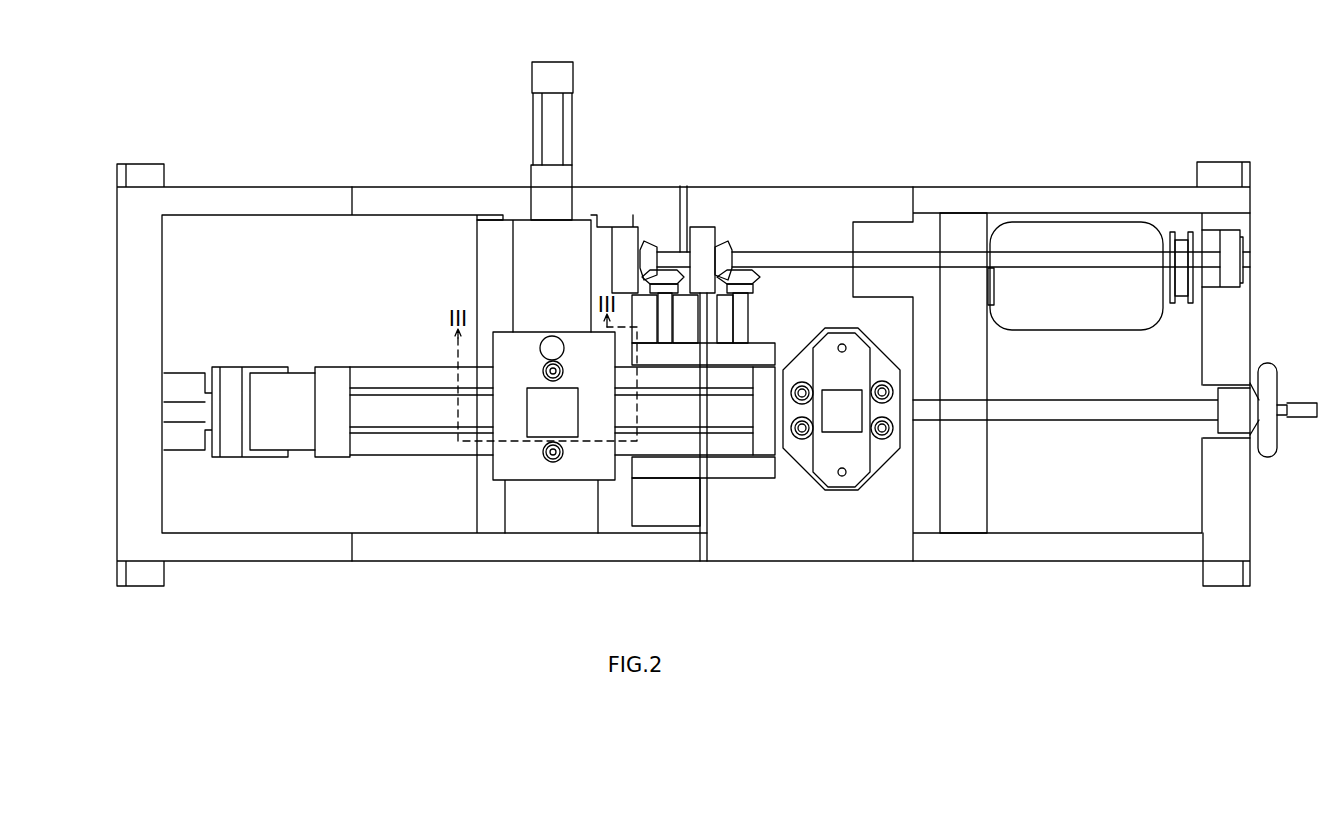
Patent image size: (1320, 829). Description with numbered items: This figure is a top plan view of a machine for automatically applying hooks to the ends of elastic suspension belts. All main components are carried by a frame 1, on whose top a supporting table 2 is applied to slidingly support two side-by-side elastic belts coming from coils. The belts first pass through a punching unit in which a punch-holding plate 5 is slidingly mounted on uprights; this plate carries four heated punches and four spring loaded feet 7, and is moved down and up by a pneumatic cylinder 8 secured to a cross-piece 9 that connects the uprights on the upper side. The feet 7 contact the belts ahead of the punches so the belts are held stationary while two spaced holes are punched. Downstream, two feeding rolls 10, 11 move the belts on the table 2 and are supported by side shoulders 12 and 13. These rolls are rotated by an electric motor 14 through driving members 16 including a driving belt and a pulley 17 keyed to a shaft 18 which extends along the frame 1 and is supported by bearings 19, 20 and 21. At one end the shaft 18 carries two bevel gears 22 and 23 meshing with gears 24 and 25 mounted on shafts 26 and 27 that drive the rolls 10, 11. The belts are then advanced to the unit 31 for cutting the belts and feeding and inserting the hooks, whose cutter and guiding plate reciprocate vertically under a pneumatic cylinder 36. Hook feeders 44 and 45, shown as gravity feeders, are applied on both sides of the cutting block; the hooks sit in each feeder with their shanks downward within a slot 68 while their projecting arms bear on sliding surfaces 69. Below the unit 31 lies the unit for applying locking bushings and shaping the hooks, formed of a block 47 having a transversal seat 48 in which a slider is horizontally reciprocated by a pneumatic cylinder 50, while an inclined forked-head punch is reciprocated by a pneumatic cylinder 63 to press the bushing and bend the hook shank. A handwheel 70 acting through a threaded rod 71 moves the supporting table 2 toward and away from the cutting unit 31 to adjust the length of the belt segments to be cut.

The frame 1 is at (320, 184).
The supporting table 2 is at (860, 186).
The punch-holding plate 5 is at (878, 455).
The spring loaded feet 7 is at (801, 382).
The pneumatic cylinder 8 is at (855, 393).
The cross-piece 9 is at (857, 480).
The feeding roll 10 is at (760, 460).
The feeding roll 11 is at (680, 478).
The side shoulder 12 is at (703, 387).
The side shoulder 13 is at (703, 387).
The electric motor 14 is at (1081, 318).
The driving member 16 is at (1187, 310).
The pulley 17 is at (1172, 245).
The shaft 18 is at (972, 258).
The bearing 19 is at (1226, 247).
The bearing 20 is at (703, 235).
The bearing 21 is at (622, 237).
The bevel gear 22 is at (722, 250).
The bevel gear 23 is at (648, 244).
The gear 24 is at (763, 276).
The gear 25 is at (663, 275).
The shaft 26 is at (752, 328).
The shaft 27 is at (670, 336).
The unit for cutting the elastic belts and for feeding and inserting the hooks 31 is at (541, 484).
The pneumatic cylinder 36 is at (572, 390).
The hook feeder 44 is at (708, 443).
The hook feeder 45 is at (392, 460).
The block 47 is at (481, 277).
The transversal seat 48 is at (578, 232).
The pneumatic cylinder 50 is at (573, 78).
The pneumatic cylinder 63 is at (292, 443).
The slot 68 is at (372, 395).
The sliding surfaces 69 is at (437, 369).
The handwheel 70 is at (1268, 458).
The threaded rod 71 is at (1083, 418).